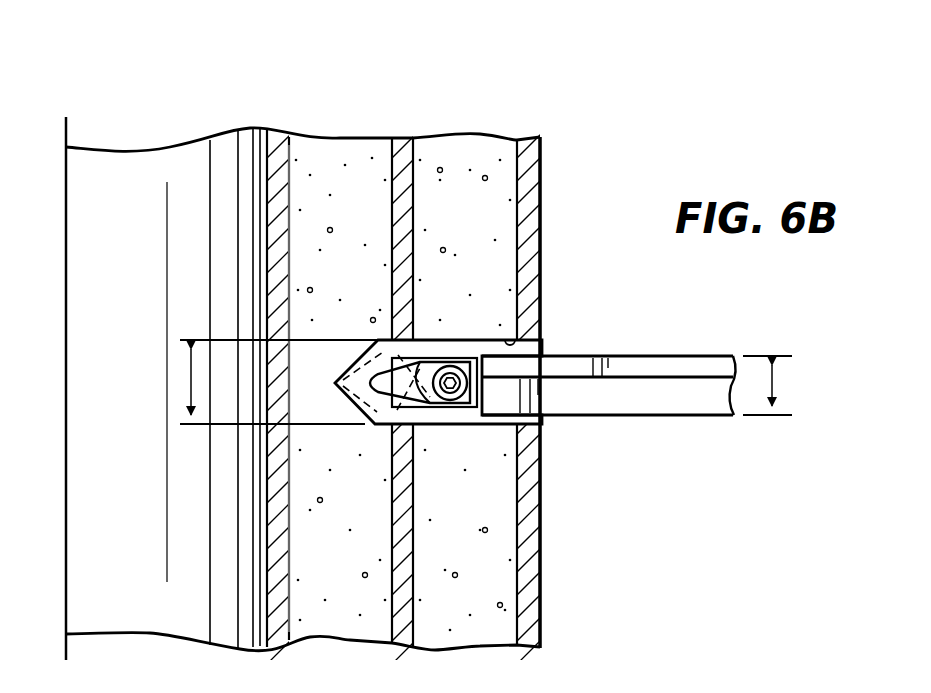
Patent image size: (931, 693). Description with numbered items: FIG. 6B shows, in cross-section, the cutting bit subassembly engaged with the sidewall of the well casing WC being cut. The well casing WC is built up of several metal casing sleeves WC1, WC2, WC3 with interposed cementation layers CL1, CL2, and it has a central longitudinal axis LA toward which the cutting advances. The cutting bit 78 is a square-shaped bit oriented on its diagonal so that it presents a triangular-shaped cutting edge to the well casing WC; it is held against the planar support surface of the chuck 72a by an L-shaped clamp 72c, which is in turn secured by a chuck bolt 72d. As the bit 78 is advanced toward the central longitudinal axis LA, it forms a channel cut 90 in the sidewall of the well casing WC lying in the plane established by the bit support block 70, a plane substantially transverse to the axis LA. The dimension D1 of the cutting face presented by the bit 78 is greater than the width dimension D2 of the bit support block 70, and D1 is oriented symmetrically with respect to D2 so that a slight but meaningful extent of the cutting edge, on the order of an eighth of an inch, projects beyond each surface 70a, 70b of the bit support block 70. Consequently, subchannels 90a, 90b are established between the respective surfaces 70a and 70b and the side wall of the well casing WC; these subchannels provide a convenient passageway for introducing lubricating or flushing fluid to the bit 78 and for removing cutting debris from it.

The well casing WC is at (158, 132).
The metal casing sleeve WC1 is at (525, 146).
The metal casing sleeve WC2 is at (402, 146).
The metal casing sleeve WC3 is at (275, 146).
The cementation layer CL1 is at (481, 239).
The cementation layer CL2 is at (366, 239).
The central longitudinal axis LA is at (66, 240).
The dimension of the cutting face D1 is at (279, 382).
The width dimension of the bit support block D2 is at (767, 385).
The bit support block 70 is at (676, 355).
The surface of the bit support block 70a is at (719, 355).
The surface of the bit support block 70b is at (683, 416).
The chuck 72a is at (436, 352).
The L-shaped clamp 72c is at (441, 424).
The chuck bolt 72d is at (462, 407).
The cutting bit 78 is at (363, 420).
The channel cut 90 is at (537, 320).
The subchannel 90a is at (548, 345).
The subchannel 90b is at (548, 422).